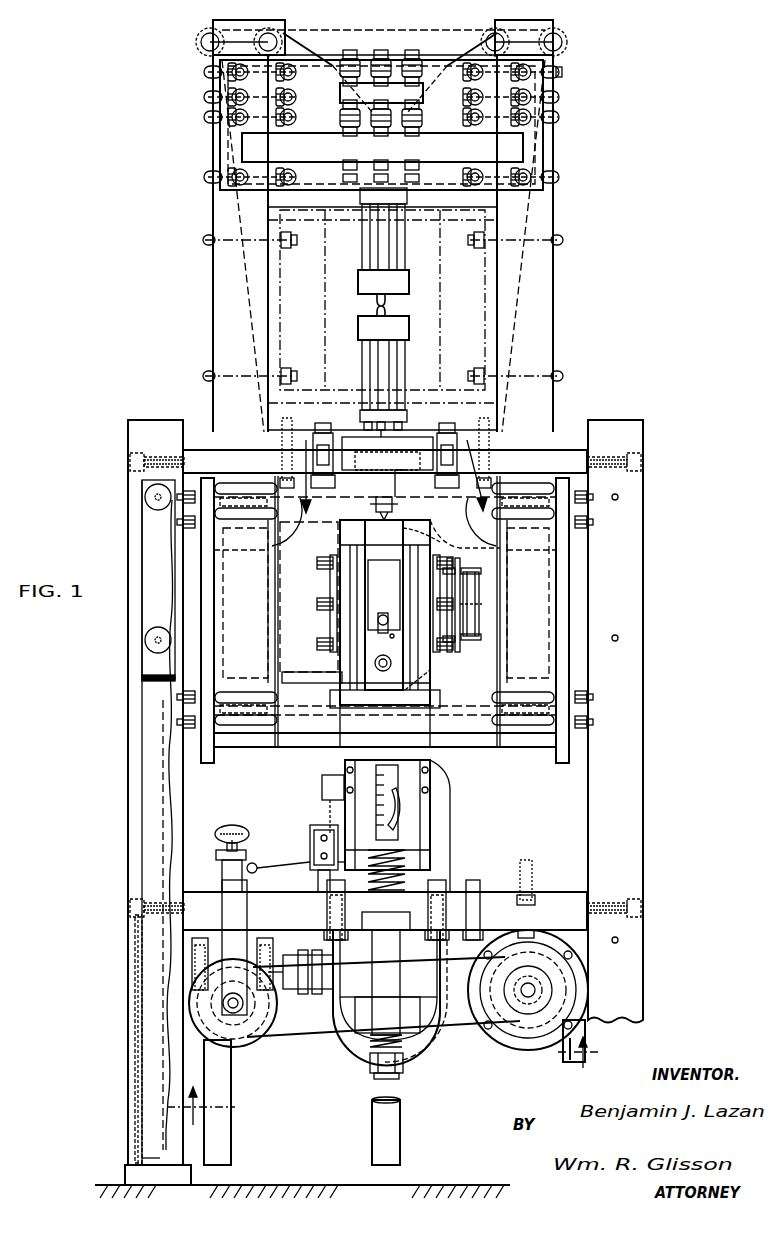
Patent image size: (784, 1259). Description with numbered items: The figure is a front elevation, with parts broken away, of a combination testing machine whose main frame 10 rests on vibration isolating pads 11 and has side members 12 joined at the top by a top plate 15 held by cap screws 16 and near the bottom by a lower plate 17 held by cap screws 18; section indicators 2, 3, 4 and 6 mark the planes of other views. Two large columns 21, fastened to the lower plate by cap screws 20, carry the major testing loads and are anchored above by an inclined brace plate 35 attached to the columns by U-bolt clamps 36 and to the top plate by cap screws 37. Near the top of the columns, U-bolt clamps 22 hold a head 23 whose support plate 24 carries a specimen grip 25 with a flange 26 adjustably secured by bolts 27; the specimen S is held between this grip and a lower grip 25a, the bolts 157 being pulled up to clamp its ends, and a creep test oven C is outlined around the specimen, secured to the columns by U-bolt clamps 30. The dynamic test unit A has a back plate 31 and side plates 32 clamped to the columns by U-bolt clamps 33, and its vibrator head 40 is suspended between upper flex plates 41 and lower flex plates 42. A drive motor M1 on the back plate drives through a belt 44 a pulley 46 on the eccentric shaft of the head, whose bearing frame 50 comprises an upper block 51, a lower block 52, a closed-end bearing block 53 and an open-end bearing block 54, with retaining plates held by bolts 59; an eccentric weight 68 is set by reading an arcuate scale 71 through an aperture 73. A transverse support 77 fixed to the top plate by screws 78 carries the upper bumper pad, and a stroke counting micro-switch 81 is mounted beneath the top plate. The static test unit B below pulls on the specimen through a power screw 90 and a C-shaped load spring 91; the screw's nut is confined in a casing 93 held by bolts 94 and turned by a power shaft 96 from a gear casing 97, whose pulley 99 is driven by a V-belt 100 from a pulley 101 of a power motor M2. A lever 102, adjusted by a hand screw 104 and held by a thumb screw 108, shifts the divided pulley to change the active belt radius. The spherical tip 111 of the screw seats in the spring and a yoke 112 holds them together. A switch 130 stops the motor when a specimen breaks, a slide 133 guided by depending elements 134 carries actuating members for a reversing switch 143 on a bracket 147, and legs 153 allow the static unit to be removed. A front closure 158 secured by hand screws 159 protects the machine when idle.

The section line 2- 2 is at (300, 15).
The section line 3- 3 is at (400, 15).
The section line 4- 4 is at (172, 17).
The view arrows 6- 6 is at (390, 468).
The main frame 10 is at (648, 592).
The vibration isolating pads 11 is at (128, 1178).
The side members 12 is at (133, 664).
The top plate 15 is at (562, 450).
The cap screws 16 is at (130, 464).
The lower plate 17 is at (577, 885).
The cap screws 18 is at (130, 907).
The cap screws 20 is at (536, 870).
The columns 21 is at (213, 334).
The U-bolt clamps 22 is at (206, 78).
The head 23 is at (240, 138).
The support plate 24 is at (515, 148).
The specimen grip 25 is at (392, 252).
The specimen grip 25a is at (392, 352).
The flange 26 is at (383, 83).
The bolts 27 is at (378, 62).
The U-bolt clamps 30 is at (205, 241).
The back plate 31 is at (500, 545).
The side plates 32 is at (205, 600).
The U-bolt clamps 33 is at (185, 498).
The inclined brace plate 35 is at (566, 74).
The U-bolt clamps 36 is at (240, 40).
The cap screws 37 is at (282, 422).
The vibrator head 40 is at (435, 672).
The upper flex plates 41 is at (384, 522).
The lower flex plates 42 is at (280, 710).
The drive belt 44 is at (452, 575).
The pulley 46 is at (480, 584).
The bearing frame 50 is at (336, 547).
The upper block 51 is at (420, 552).
The lower block 52 is at (342, 664).
The closed-end bearing block 53 is at (345, 617).
The open-end bearing block 54 is at (422, 617).
The bolts 59 is at (317, 645).
The eccentric weight 68 is at (378, 658).
The arcuate scale 71 is at (396, 625).
The aperture 73 is at (378, 625).
The transverse support 77 is at (412, 440).
The screws 78 is at (322, 426).
The stroke counting micro-switch 81 is at (376, 508).
The power screw 90 is at (405, 866).
The C-shaped load spring 91 is at (435, 822).
The casing 93 is at (362, 1020).
The bolts 94 is at (446, 895).
The power shaft 96 is at (328, 992).
The gear casing 97 is at (200, 965).
The pulley 99 is at (270, 1040).
The belt 100 is at (445, 1030).
The pulley 101 is at (518, 1018).
The lever 102 is at (222, 912).
The hand screw 104 is at (218, 840).
The thumb screw 108 is at (262, 866).
The spherical tip 111 is at (372, 1074).
The yoke 112 is at (385, 1080).
The switch 130 is at (328, 796).
The slide 133 is at (398, 822).
The depending elements 134 is at (420, 800).
The reversing switch 143 is at (314, 865).
The bracket 147 is at (318, 892).
The legs 153 is at (220, 1101).
The bolts 157 is at (368, 262).
The front closure 158 is at (146, 616).
The hand screws 159 is at (145, 644).
The dynamic test unit A is at (575, 580).
The static test unit B is at (495, 880).
The creep test oven C is at (440, 296).
The specimen S is at (378, 305).
The drive motor M1 is at (309, 597).
The power motor M2 is at (524, 1050).